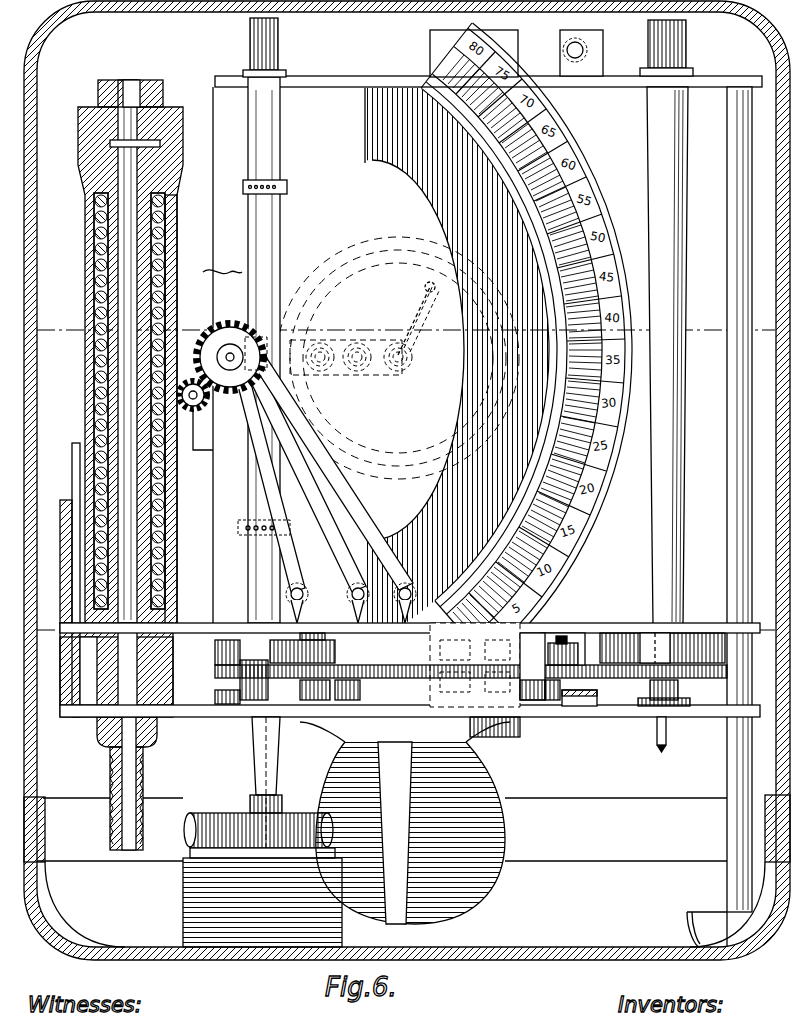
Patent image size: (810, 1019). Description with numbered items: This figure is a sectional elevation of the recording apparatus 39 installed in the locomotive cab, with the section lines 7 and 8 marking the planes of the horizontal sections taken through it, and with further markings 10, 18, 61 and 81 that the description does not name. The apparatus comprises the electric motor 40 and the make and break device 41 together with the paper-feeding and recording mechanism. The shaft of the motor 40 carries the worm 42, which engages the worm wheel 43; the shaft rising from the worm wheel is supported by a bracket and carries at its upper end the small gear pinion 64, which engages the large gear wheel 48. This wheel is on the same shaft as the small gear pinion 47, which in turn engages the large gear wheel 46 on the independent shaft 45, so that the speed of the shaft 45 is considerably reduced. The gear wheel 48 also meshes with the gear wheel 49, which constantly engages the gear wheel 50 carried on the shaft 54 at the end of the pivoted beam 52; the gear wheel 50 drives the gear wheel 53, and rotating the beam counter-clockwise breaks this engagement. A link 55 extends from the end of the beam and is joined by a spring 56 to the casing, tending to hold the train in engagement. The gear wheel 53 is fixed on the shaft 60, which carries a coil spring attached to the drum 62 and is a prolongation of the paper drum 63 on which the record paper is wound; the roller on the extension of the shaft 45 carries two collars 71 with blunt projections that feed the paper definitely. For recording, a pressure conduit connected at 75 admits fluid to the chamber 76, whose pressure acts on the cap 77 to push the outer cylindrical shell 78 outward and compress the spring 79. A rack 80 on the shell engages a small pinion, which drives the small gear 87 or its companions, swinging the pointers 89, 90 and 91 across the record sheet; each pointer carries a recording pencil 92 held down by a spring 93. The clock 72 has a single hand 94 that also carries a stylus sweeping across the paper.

The section line 7 is at (64, 300).
The section line 8 is at (55, 597).
The direction arrow 10 is at (180, 757).
The ball bearing column 18 is at (168, 250).
The recording apparatus 39 is at (528, 960).
The electric motor 40 is at (410, 835).
The make and break device 41 is at (306, 926).
The worm 42 is at (288, 808).
The worm wheel 43 is at (322, 818).
The shaft 45 is at (248, 763).
The large gear wheel 46 is at (204, 653).
The small gear pinion 47 is at (332, 658).
The large gear wheel 48 is at (471, 687).
The gear wheel 49 is at (385, 680).
The gear wheel 50 is at (592, 680).
The beam 52 is at (534, 718).
The gear wheel 53 is at (675, 693).
The shaft 54 is at (541, 703).
The link 55 is at (577, 646).
The spring 56 is at (562, 636).
The shaft 60 is at (668, 735).
The tip 61 is at (662, 753).
The drum 62 is at (687, 640).
The paper drum 63 is at (666, 322).
The small gear pinion 64 is at (252, 668).
The collars 71 is at (294, 194).
The clock 72 is at (398, 350).
The pressure conduit connection 75 is at (110, 826).
The chamber 76 is at (95, 282).
The cap 77 is at (160, 84).
The outer cylindrical shell 78 is at (160, 598).
The spring 79 is at (211, 275).
The rack 80 is at (186, 452).
The pinion 81 is at (180, 410).
The small gear 87 is at (212, 320).
The pointer 89 is at (300, 433).
The pointer 90 is at (265, 450).
The pointer 91 is at (272, 484).
The recording stylus or pencil 92 is at (262, 604).
The spring 93 is at (292, 540).
The hand 94 is at (421, 321).